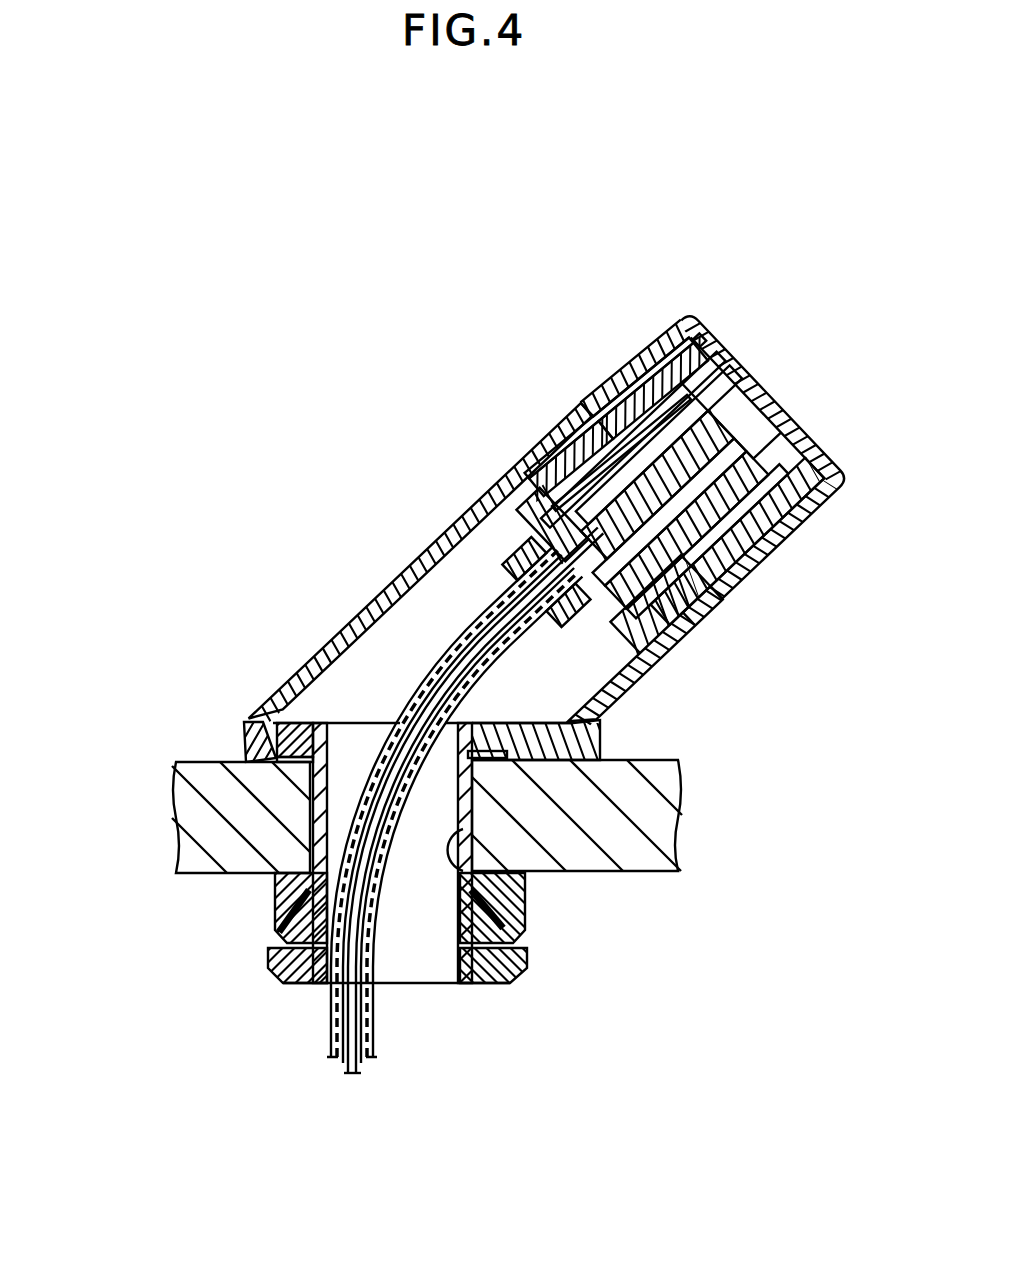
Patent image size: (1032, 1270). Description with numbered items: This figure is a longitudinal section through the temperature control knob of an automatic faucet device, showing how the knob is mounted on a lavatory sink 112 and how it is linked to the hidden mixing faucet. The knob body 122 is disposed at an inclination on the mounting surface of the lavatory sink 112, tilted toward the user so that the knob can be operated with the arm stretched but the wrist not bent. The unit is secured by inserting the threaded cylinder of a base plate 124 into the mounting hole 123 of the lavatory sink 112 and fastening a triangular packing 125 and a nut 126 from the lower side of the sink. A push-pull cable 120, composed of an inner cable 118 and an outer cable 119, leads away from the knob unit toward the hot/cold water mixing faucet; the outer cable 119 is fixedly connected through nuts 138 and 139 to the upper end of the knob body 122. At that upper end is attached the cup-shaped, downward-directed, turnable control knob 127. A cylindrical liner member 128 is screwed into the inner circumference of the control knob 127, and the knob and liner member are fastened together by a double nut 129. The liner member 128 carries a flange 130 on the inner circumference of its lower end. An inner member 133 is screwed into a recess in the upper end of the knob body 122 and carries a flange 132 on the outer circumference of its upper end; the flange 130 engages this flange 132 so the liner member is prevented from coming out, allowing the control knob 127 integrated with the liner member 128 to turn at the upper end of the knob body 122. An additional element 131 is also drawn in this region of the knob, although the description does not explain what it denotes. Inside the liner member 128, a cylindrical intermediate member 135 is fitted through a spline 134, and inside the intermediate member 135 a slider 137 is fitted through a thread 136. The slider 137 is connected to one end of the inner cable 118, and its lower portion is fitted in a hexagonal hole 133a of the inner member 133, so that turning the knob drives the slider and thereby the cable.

The lavatory sink 112 is at (378, 816).
The inner cable 118 is at (410, 801).
The outer cable 119 is at (454, 807).
The push-pull cable 120 is at (305, 1105).
The knob body 122 is at (497, 647).
The mounting hole 123 is at (526, 884).
The base plate 124 is at (245, 713).
The triangular packing 125 is at (357, 908).
The nut 126 is at (357, 975).
The control knob 127 is at (728, 452).
The liner member 128 is at (650, 356).
The double nut 129 is at (591, 407).
The flange 130 is at (563, 439).
The retaining ring 131 is at (484, 498).
The flange 132 is at (717, 540).
The inner member 133 is at (738, 564).
The hexagonal hole 133a is at (745, 672).
The spline 134 is at (714, 295).
The intermediate member 135 is at (667, 403).
The thread 136 is at (714, 419).
The slider 137 is at (741, 470).
The nut 138 is at (466, 555).
The nut 139 is at (666, 647).